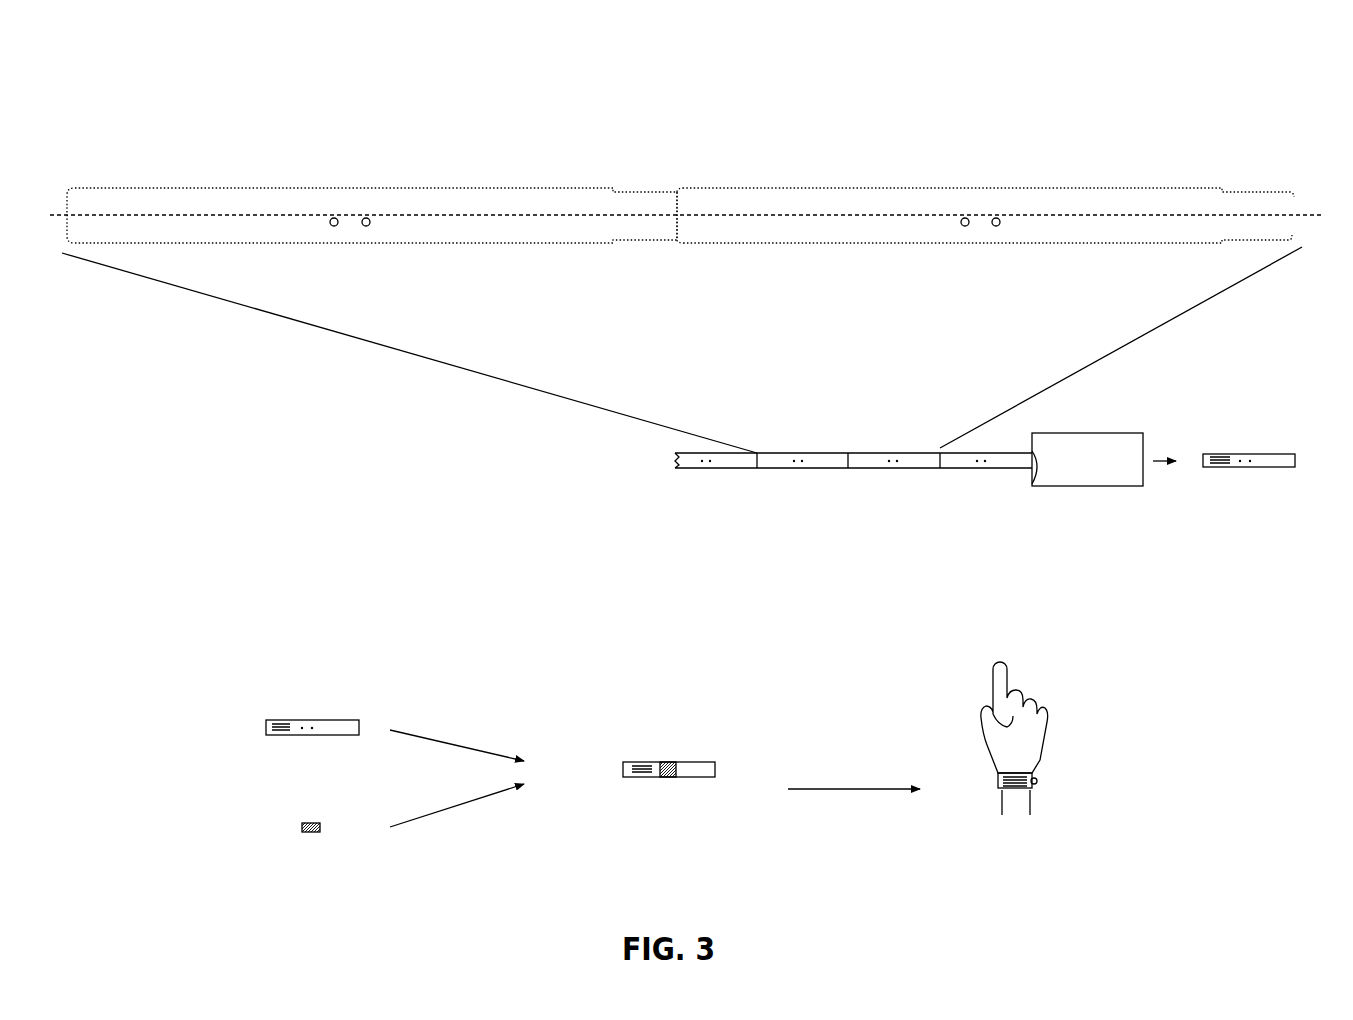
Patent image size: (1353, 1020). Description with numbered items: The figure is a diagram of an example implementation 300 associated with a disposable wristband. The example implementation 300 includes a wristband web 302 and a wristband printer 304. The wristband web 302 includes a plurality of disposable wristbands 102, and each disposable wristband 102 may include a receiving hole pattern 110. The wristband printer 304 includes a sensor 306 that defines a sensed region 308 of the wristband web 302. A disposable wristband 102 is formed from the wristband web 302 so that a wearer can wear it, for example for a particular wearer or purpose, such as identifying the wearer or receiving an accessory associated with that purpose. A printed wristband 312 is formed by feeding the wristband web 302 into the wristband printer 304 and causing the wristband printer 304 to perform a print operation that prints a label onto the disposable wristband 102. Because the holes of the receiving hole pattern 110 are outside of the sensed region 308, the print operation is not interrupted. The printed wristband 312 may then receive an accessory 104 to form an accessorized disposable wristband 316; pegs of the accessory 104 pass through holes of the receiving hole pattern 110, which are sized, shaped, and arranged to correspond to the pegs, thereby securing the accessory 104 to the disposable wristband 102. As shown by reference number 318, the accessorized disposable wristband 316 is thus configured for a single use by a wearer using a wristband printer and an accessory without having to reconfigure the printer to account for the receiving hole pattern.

The example implementation 300 is at (183, 67).
The disposable wristband 102 is at (1282, 175).
The receiving hole pattern 110 is at (340, 238).
The sensed region 308 is at (543, 215).
The wristband web 302 is at (788, 486).
The wristband printer 304 is at (1104, 459).
The sensor 306 is at (1036, 468).
The printed wristband 312 is at (1250, 452).
The accessory 104 is at (312, 834).
The accessorized disposable wristband 316 is at (672, 762).
The accessorized disposable wristband configured for single use 318 is at (1020, 773).